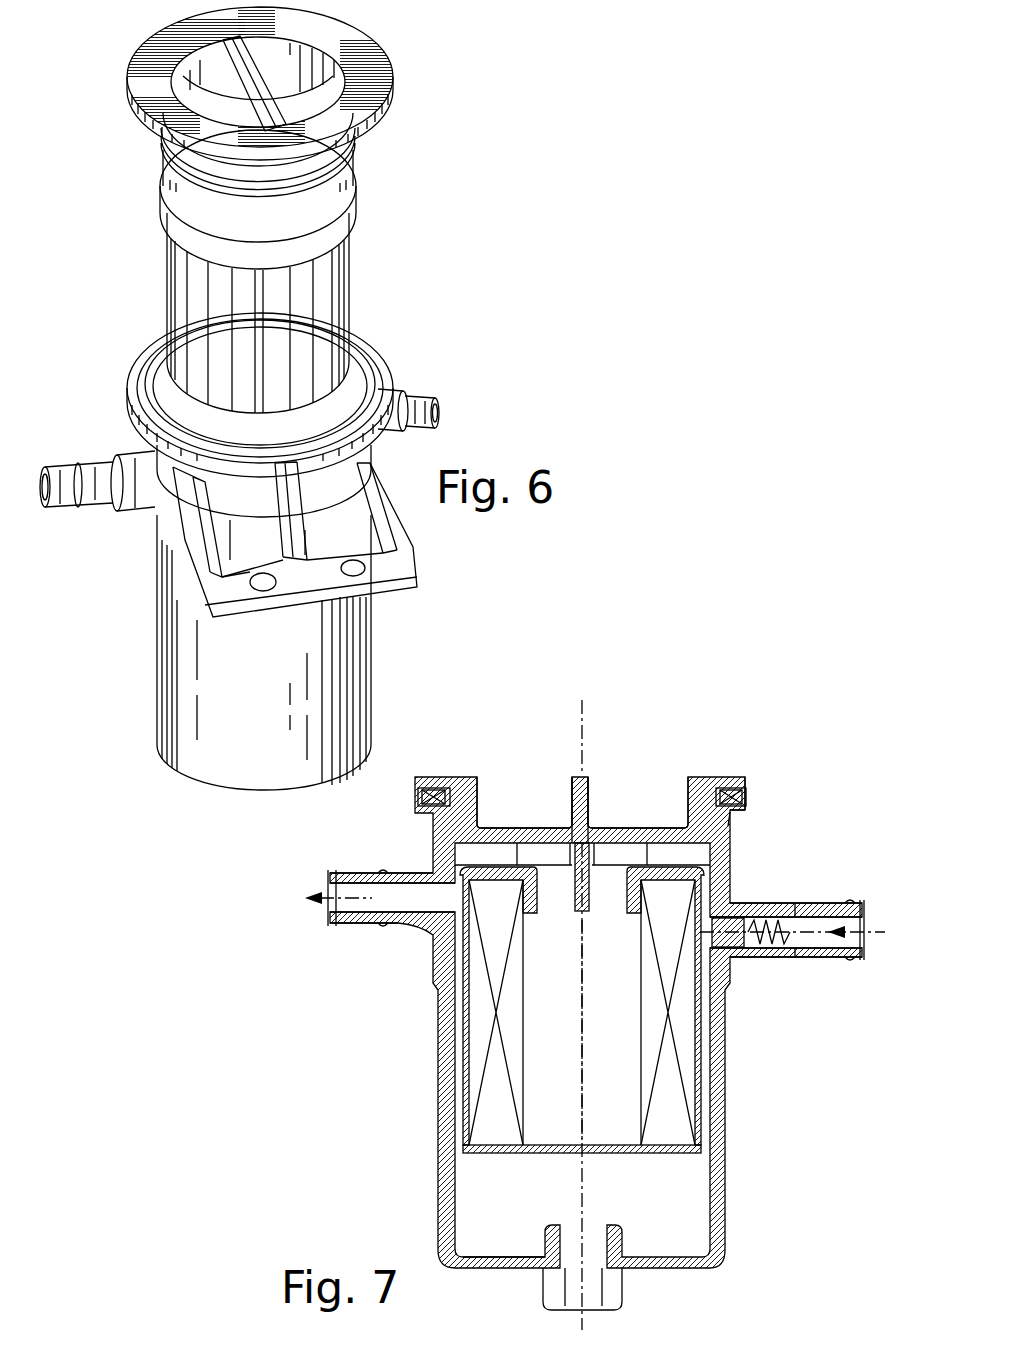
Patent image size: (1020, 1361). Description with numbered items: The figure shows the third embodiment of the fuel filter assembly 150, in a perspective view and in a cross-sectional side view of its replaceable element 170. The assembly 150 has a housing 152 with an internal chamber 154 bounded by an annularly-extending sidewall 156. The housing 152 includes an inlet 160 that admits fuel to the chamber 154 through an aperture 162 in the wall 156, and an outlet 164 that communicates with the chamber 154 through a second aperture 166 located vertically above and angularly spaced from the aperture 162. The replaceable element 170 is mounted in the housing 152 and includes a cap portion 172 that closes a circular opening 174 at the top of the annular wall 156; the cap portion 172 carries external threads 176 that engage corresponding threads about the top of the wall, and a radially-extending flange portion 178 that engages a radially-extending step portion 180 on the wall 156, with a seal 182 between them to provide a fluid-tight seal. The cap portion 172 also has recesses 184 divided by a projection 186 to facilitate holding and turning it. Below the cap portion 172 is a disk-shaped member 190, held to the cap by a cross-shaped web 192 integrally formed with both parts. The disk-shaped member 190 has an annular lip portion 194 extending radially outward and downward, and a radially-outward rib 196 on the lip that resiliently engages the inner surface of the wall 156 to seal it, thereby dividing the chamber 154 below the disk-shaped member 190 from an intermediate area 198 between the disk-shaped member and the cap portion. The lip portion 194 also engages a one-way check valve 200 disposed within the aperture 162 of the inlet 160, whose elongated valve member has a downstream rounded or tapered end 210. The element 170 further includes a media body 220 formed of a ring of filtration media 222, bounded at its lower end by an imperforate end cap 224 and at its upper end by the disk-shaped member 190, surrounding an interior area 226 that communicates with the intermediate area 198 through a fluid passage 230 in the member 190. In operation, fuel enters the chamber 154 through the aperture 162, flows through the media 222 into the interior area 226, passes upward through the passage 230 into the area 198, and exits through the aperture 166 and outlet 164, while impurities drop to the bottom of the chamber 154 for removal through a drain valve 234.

In FIG. 6, the filter assembly 150 is at (448, 618).
In FIG. 7, the filter assembly 150 is at (818, 1144).
In FIG. 6, the housing 152 is at (186, 768).
In FIG. 7, the housing 152 is at (596, 1090).
In FIG. 7, the internal chamber 154 is at (538, 1210).
In FIG. 7, the sidewall 156 is at (731, 1050).
In FIG. 6, the inlet 160 is at (407, 388).
In FIG. 7, the inlet 160 is at (782, 903).
In FIG. 7, the aperture 162 is at (730, 950).
In FIG. 6, the outlet 164 is at (96, 506).
In FIG. 7, the outlet 164 is at (386, 872).
In FIG. 7, the second aperture 166 is at (400, 898).
In FIG. 6, the replaceable element 170 is at (358, 44).
In FIG. 7, the replaceable element 170 is at (664, 766).
In FIG. 7, the cap portion 172 is at (613, 789).
In FIG. 7, the circular opening 174 is at (745, 822).
In FIG. 7, the external threads 176 is at (482, 790).
In FIG. 6, the flange portion 178 is at (146, 96).
In FIG. 7, the flange portion 178 is at (742, 789).
In FIG. 6, the step portion 180 is at (125, 372).
In FIG. 7, the step portion 180 is at (752, 800).
In FIG. 6, the seal 182 is at (152, 362).
In FIG. 7, the seal 182 is at (728, 789).
In FIG. 7, the recesses 184 is at (516, 803).
In FIG. 6, the projection 186 is at (243, 52).
In FIG. 7, the projection 186 is at (566, 792).
In FIG. 7, the disk-shaped member 190 is at (613, 868).
In FIG. 7, the cross-shaped web 192 is at (573, 856).
In FIG. 6, the annular lip portion 194 is at (188, 211).
In FIG. 6, the rib 196 is at (362, 181).
In FIG. 7, the intermediate area 198 is at (480, 855).
In FIG. 7, the one-way check valve 200 is at (814, 900).
In FIG. 7, the rounded or tapered end 210 is at (840, 950).
In FIG. 6, the media body 220 is at (350, 289).
In FIG. 7, the media body 220 is at (520, 1037).
In FIG. 7, the filtration media 222 is at (524, 1088).
In FIG. 7, the end cap 224 is at (632, 1153).
In FIG. 7, the interior area 226 is at (632, 1033).
In FIG. 7, the fluid passage 230 is at (582, 1012).
In FIG. 7, the drain valve 234 is at (616, 1285).